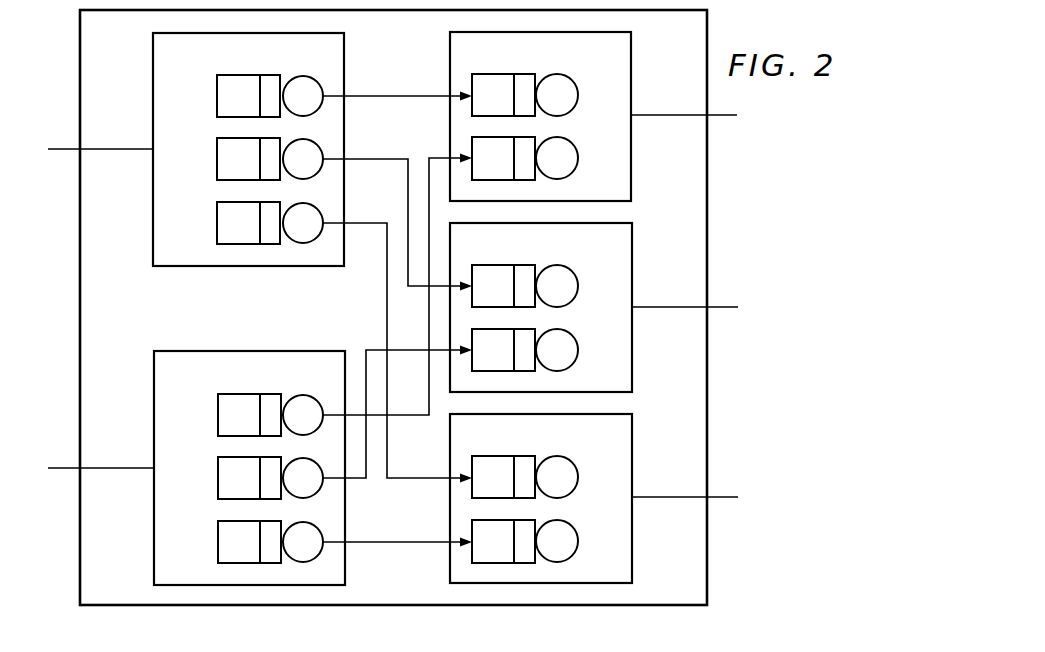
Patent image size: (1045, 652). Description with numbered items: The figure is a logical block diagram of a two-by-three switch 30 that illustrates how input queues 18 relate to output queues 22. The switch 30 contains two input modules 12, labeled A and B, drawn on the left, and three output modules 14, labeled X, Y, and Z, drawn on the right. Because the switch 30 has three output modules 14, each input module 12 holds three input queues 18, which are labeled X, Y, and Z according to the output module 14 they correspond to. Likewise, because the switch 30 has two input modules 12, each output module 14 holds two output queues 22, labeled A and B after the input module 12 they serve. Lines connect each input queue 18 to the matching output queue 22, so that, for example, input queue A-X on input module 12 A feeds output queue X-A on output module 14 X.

The switch 30 is at (79, 310).
The input module 12 is at (153, 118).
The input queue 18 is at (217, 97).
The output module 14 is at (633, 83).
The output queue 22 is at (573, 80).